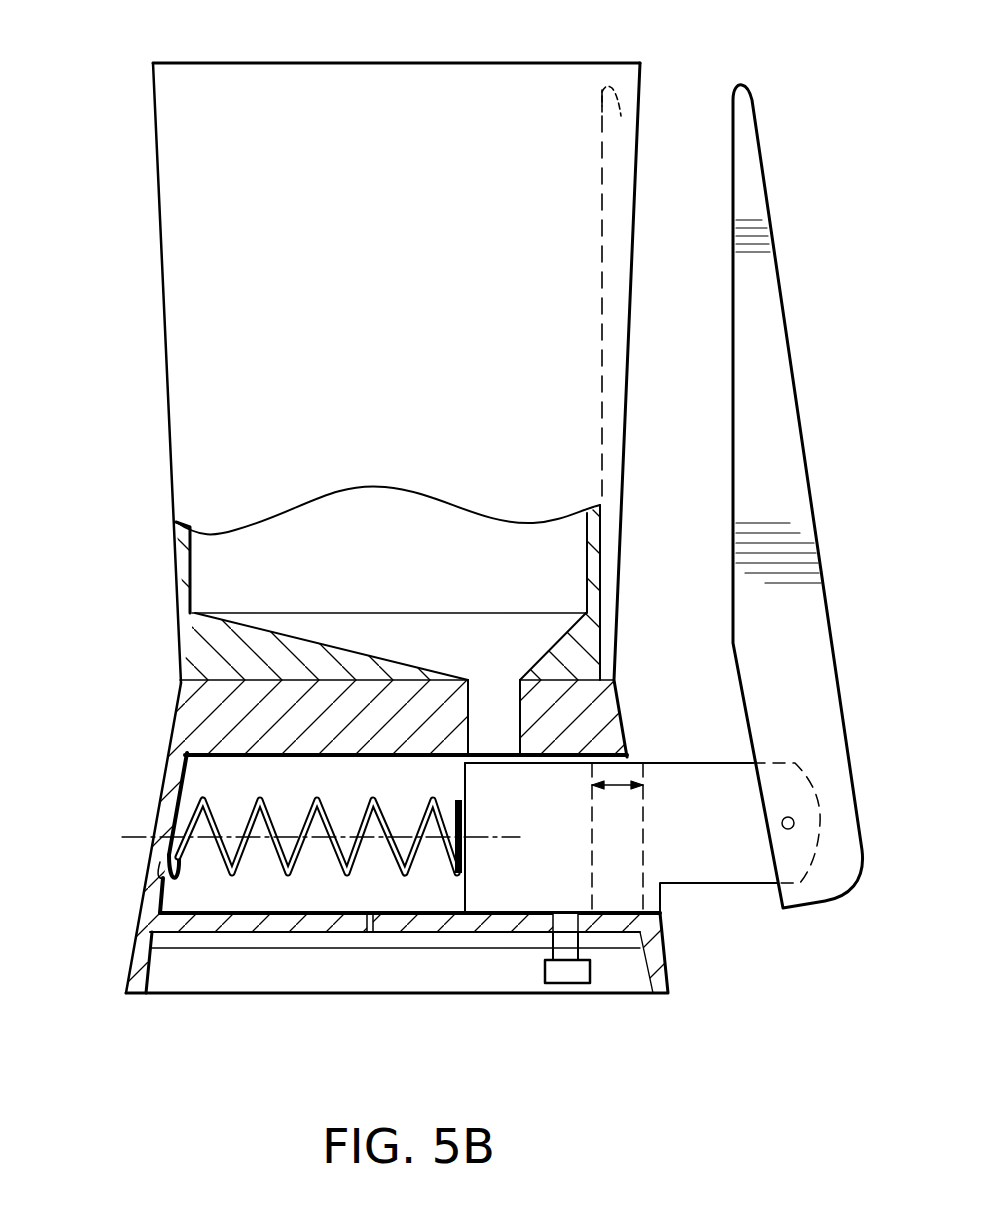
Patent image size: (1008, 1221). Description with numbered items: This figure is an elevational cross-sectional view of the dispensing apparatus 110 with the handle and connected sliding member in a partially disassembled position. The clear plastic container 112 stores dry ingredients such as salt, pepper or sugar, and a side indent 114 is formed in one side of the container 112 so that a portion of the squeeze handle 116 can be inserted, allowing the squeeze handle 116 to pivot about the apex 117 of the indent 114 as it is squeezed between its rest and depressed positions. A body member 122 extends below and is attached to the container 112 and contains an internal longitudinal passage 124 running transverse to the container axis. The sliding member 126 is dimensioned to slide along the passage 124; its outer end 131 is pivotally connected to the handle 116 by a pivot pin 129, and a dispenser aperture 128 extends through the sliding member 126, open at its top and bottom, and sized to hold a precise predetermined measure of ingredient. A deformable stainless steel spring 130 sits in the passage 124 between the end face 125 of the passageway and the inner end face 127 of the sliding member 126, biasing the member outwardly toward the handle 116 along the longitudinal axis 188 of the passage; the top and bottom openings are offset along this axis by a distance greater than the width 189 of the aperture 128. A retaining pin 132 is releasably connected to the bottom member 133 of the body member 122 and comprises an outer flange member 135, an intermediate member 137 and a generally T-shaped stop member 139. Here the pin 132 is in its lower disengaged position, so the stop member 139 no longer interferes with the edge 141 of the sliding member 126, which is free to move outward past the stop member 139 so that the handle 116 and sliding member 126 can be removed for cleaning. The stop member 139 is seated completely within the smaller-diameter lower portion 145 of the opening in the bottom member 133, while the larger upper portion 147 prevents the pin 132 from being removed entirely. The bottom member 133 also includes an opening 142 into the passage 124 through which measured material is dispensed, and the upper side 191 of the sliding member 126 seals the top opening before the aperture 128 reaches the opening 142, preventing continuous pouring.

The apparatus 110 is at (100, 88).
The container 112 is at (160, 195).
The side indent 114 is at (617, 137).
The squeeze handle 116 is at (752, 182).
The apex 117 is at (632, 105).
The body member 122 is at (621, 716).
The internal longitudinal passage 124 is at (220, 772).
The end face 125 is at (160, 895).
The sliding member 126 is at (432, 980).
The inner end face 127 is at (649, 807).
The dispenser aperture 128 is at (633, 835).
The pivot pin 129 is at (795, 820).
The spring 130 is at (350, 873).
The outer end 131 is at (800, 850).
The retaining pin 132 is at (599, 956).
The bottom member 133 is at (303, 932).
The outer flange member 135 is at (543, 970).
The intermediate member 137 is at (578, 953).
The stop member 139 is at (570, 910).
The edge 141 is at (662, 902).
The opening 142 is at (398, 925).
The lower portion 145 is at (540, 925).
The upper portion 147 is at (580, 943).
The longitudinal axis 188 is at (137, 833).
The width 189 is at (620, 783).
The upper side 191 is at (705, 762).